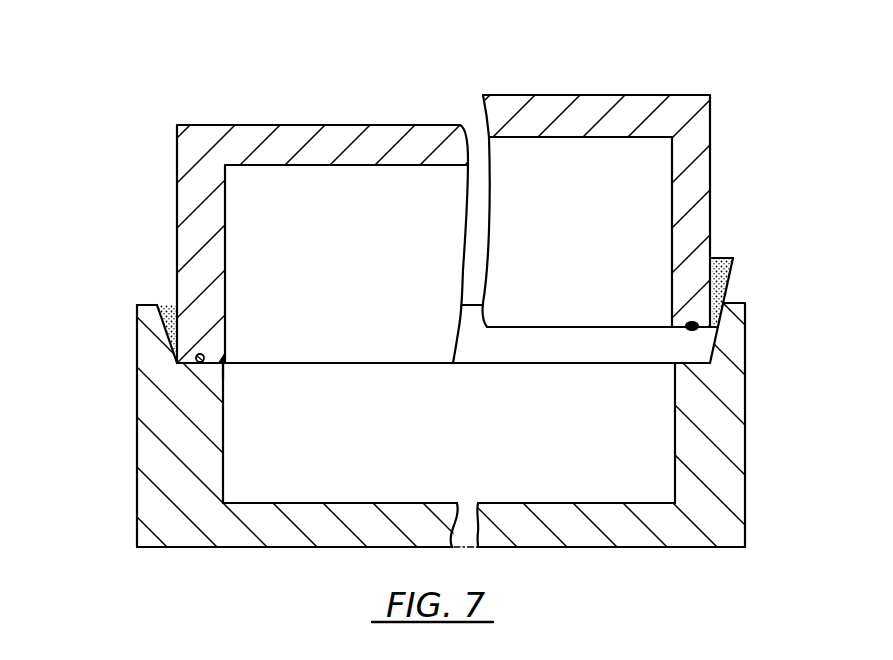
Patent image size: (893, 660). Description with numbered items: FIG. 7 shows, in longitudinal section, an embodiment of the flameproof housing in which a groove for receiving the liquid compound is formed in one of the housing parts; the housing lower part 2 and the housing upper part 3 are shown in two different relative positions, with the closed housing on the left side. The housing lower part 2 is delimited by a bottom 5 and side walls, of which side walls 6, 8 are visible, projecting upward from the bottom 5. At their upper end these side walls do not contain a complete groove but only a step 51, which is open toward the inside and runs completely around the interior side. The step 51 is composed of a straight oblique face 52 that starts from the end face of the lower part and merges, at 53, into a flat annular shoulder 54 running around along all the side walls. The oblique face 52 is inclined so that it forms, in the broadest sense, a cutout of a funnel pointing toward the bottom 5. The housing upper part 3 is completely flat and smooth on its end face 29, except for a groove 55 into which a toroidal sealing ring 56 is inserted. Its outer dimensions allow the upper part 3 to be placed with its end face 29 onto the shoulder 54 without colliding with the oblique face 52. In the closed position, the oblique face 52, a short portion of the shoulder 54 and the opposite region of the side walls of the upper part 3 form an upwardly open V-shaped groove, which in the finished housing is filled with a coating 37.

The housing lower part 2 is at (446, 430).
The housing upper part 3 is at (190, 112).
The bottom 5 is at (293, 541).
The side wall 6 is at (745, 448).
The side wall 8 is at (137, 460).
The end face 29 is at (586, 326).
The coating 37 is at (163, 318).
The step 51 is at (163, 286).
The oblique face 52 is at (173, 336).
The merging point 53 is at (177, 363).
The annular shoulder 54 is at (223, 367).
The groove 55 is at (203, 357).
The toroidal sealing ring 56 is at (222, 357).